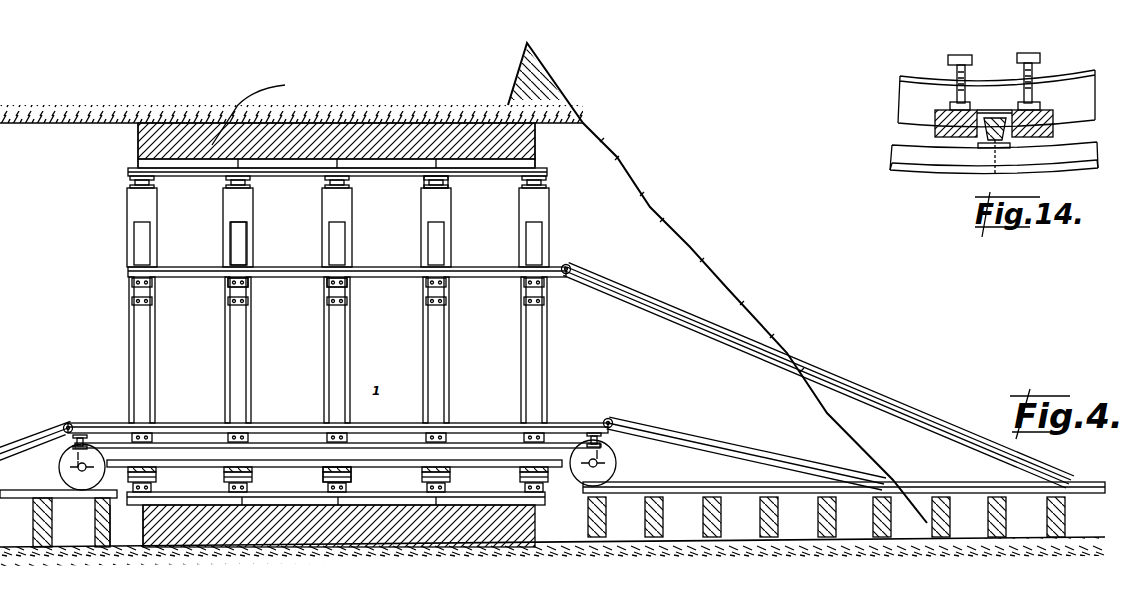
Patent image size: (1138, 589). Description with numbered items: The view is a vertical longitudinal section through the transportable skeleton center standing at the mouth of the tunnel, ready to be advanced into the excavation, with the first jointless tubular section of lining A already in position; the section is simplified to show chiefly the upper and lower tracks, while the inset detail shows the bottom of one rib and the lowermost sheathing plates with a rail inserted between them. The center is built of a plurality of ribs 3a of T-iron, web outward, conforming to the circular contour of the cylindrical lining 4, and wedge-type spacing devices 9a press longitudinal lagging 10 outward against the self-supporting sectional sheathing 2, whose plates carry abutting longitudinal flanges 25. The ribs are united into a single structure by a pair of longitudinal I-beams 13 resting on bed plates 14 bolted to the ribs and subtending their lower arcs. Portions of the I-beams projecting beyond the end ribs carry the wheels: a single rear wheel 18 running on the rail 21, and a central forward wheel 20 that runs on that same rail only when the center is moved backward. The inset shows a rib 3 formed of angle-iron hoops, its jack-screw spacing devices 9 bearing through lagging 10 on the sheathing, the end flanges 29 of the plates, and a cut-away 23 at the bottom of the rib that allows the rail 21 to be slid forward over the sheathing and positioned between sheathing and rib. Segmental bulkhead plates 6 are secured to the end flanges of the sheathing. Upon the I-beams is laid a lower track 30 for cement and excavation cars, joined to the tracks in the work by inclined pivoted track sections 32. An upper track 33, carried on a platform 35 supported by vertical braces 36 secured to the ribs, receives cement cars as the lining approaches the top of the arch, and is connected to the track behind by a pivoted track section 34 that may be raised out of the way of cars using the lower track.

In FIG. 4, the self-supporting sectional sheathing 2 is at (8, 442).
In FIG. 14, the rib 3 is at (1096, 105).
In FIG. 4, the rib 3a is at (230, 232).
In FIG. 4, the cylindrical lining 4 is at (381, 107).
In FIG. 4, the segmental bulkhead plate 6 is at (137, 158).
In FIG. 14, the spacing device 9 is at (1033, 75).
In FIG. 4, the spacing device 9a is at (448, 182).
In FIG. 4, the lagging 10 is at (206, 177).
In FIG. 14, the lagging 10 is at (935, 130).
In FIG. 4, the I-beam 13 is at (360, 482).
In FIG. 4, the bed plate 14 is at (254, 470).
In FIG. 14, the bed plate 14 is at (887, 180).
In FIG. 4, the rear wheel 18 is at (612, 470).
In FIG. 4, the central forward wheel 20 is at (88, 480).
In FIG. 4, the rail 21 is at (620, 494).
In FIG. 14, the rail 21 is at (983, 150).
In FIG. 14, the cut-away portion 23 is at (991, 112).
In FIG. 4, the flange 25 is at (313, 170).
In FIG. 14, the flange 29 is at (1098, 146).
In FIG. 4, the track 30 is at (286, 421).
In FIG. 4, the inclined track section 32 is at (746, 449).
In FIG. 4, the upper track 33 is at (383, 265).
In FIG. 4, the pivoted track section 34 is at (874, 404).
In FIG. 4, the platform 35 is at (328, 286).
In FIG. 4, the vertical brace 36 is at (348, 347).
In FIG. 4, the first jointless tubular section of lining A is at (257, 109).